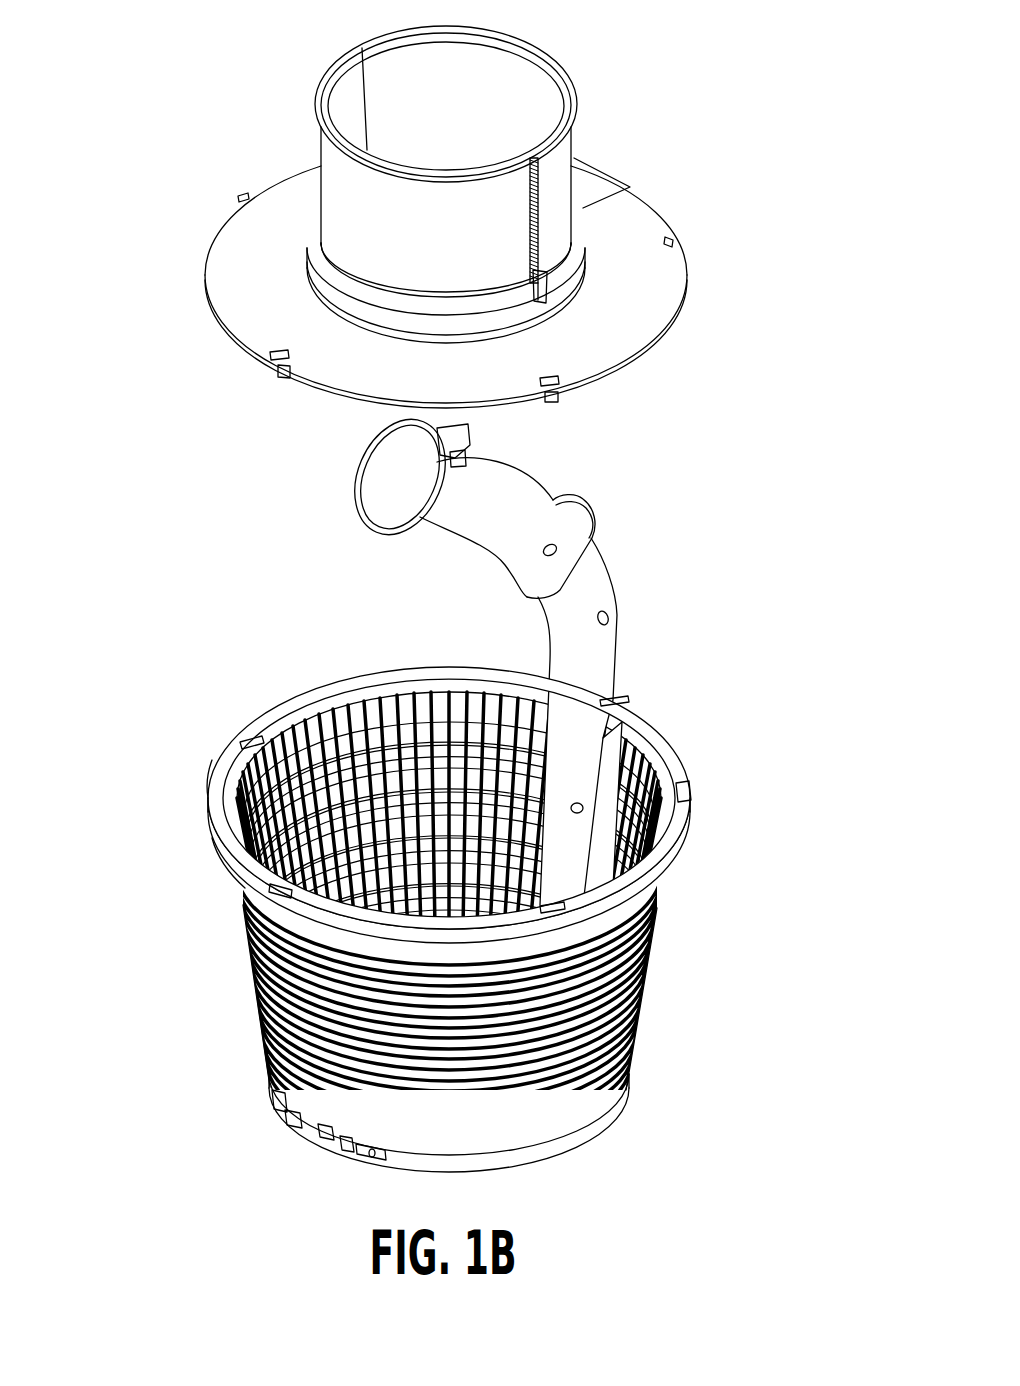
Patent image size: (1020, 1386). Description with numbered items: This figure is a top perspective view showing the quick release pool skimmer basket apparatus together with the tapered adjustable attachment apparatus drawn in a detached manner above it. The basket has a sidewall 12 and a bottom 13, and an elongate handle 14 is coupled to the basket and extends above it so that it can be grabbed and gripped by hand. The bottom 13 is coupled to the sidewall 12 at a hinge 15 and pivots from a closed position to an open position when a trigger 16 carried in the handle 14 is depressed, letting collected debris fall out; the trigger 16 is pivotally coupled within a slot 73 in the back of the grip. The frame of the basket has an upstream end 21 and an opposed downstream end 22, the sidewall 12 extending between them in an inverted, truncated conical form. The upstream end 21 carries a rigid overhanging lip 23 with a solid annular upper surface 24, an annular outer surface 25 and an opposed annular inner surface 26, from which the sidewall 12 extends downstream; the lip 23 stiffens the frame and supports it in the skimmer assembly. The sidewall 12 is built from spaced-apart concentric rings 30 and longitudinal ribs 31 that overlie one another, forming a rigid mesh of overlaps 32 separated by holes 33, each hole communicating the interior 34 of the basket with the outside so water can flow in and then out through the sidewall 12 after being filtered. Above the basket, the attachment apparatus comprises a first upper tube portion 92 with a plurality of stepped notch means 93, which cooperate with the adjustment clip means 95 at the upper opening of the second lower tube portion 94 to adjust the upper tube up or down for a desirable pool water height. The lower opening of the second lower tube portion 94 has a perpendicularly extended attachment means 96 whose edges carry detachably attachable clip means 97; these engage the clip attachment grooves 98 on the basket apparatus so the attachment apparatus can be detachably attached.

The sidewall 12 is at (640, 975).
The bottom 13 is at (612, 1105).
The elongate handle 14 is at (618, 583).
The hinge 15 is at (340, 1148).
The trigger 16 is at (445, 432).
The upstream end 21 is at (262, 724).
The downstream end 22 is at (268, 1085).
The lip 23 is at (208, 785).
The upper surface 24 is at (222, 832).
The outer surface 25 is at (238, 886).
The inner surface 26 is at (300, 718).
The concentric rings 30 is at (528, 1130).
The longitudinal ribs 31 is at (335, 712).
The overlaps 32 is at (395, 710).
The holes 33 is at (455, 715).
The interior 34 is at (458, 792).
The slot 73 is at (458, 456).
The first upper tube portion 92 is at (343, 192).
The stepped notch means 93 is at (532, 212).
The second lower tube portion 94 is at (422, 316).
The adjustment clip means 95 is at (545, 292).
The perpendicularly extended attachment means 96 is at (238, 253).
The detachably attachable clip means 97 is at (278, 372).
The clip attachment grooves 98 is at (688, 790).